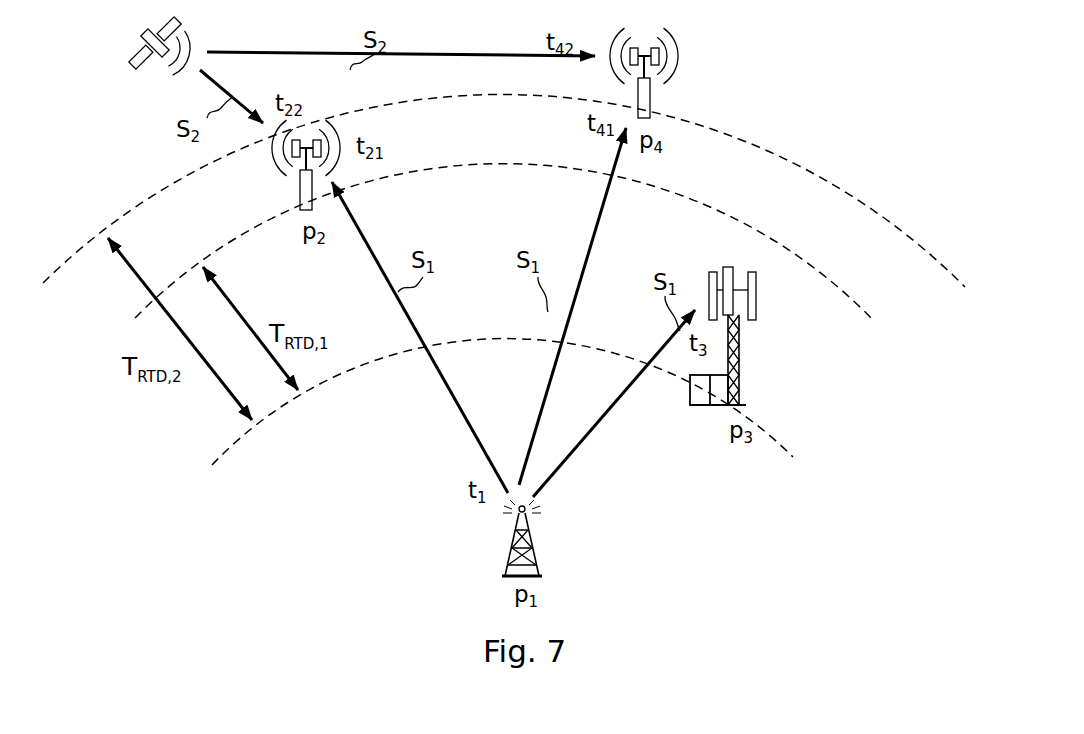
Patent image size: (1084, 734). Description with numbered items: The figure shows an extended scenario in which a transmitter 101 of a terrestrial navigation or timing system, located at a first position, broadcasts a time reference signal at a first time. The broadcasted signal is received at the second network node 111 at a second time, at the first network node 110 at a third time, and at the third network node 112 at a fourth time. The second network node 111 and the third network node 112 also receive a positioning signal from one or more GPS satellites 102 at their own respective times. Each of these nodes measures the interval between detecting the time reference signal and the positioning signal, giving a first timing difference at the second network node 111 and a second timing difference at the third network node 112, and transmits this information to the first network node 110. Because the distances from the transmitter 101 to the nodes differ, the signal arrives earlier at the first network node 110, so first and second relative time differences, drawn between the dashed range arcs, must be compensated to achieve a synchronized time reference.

The transmitter 101 is at (535, 547).
The GPS satellites 102 is at (134, 68).
The first network node 110 is at (759, 290).
The second network node 111 is at (300, 190).
The third network node 112 is at (650, 110).